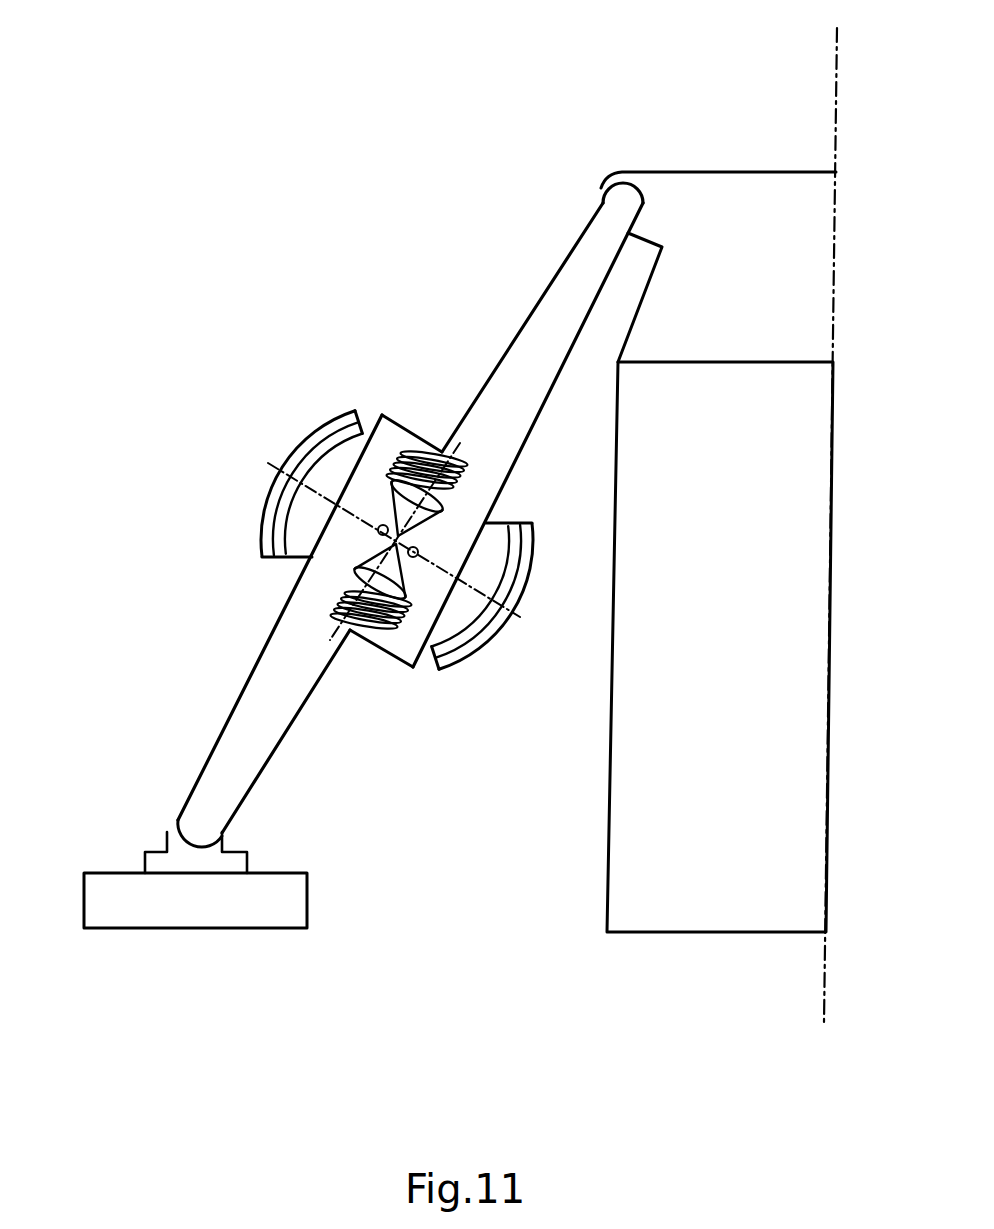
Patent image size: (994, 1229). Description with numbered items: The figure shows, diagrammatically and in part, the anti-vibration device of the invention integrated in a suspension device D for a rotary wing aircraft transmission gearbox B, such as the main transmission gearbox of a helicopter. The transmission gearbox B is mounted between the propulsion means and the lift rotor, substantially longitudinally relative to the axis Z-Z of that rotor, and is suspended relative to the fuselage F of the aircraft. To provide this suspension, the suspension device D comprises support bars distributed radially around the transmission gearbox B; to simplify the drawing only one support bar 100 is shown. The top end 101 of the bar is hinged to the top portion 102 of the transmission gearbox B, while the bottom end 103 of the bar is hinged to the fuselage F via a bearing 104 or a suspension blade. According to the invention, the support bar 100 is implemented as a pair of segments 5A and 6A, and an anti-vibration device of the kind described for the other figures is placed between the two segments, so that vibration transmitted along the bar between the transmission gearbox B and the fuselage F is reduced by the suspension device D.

The support bar 100 is at (482, 367).
The top end of the bar 101 is at (584, 210).
The top portion of the transmission gearbox 102 is at (711, 198).
The bottom end of the bar 103 is at (170, 807).
The bearing 104 is at (149, 864).
The segment 5A is at (561, 279).
The segment 6A is at (264, 758).
The suspension device D is at (483, 682).
The fuselage F is at (293, 903).
The transmission gearbox B is at (688, 935).
The axis of the rotor Z is at (831, 534).